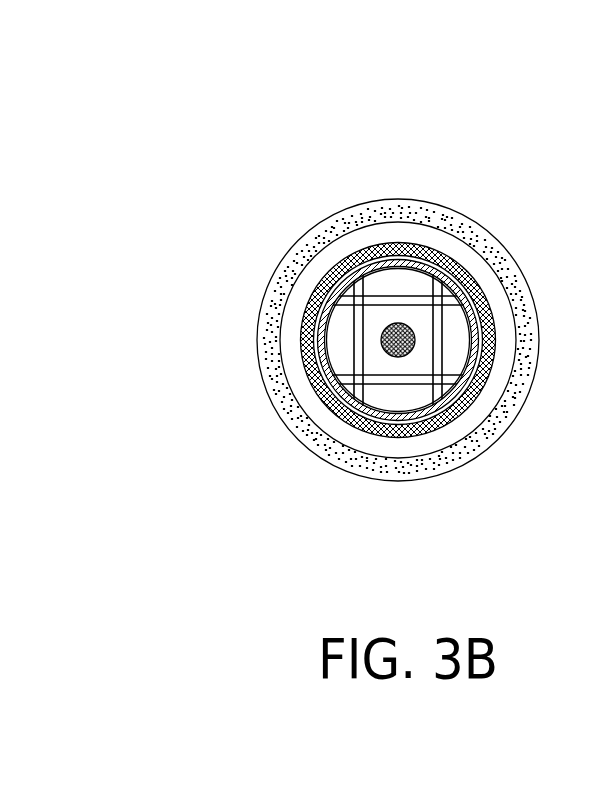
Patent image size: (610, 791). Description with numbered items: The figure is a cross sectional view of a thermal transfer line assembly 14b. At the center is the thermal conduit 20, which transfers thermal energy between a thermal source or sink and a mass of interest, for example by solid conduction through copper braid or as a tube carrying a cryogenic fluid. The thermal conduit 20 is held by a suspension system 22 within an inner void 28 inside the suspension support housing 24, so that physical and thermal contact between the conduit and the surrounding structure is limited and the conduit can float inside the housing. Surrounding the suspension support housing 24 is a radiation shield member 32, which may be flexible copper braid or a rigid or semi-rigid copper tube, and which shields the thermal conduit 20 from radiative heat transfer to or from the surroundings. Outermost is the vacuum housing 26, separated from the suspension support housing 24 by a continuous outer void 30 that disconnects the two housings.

The thermal transfer line assembly 14b is at (327, 135).
The thermal conduit 20 is at (397, 360).
The suspension system 22 is at (385, 298).
The suspension support housing 24 is at (480, 380).
The vacuum housing 26 is at (447, 215).
The inner void 28 is at (373, 357).
The outer void 30 is at (290, 318).
The radiation shield member 32 is at (482, 293).